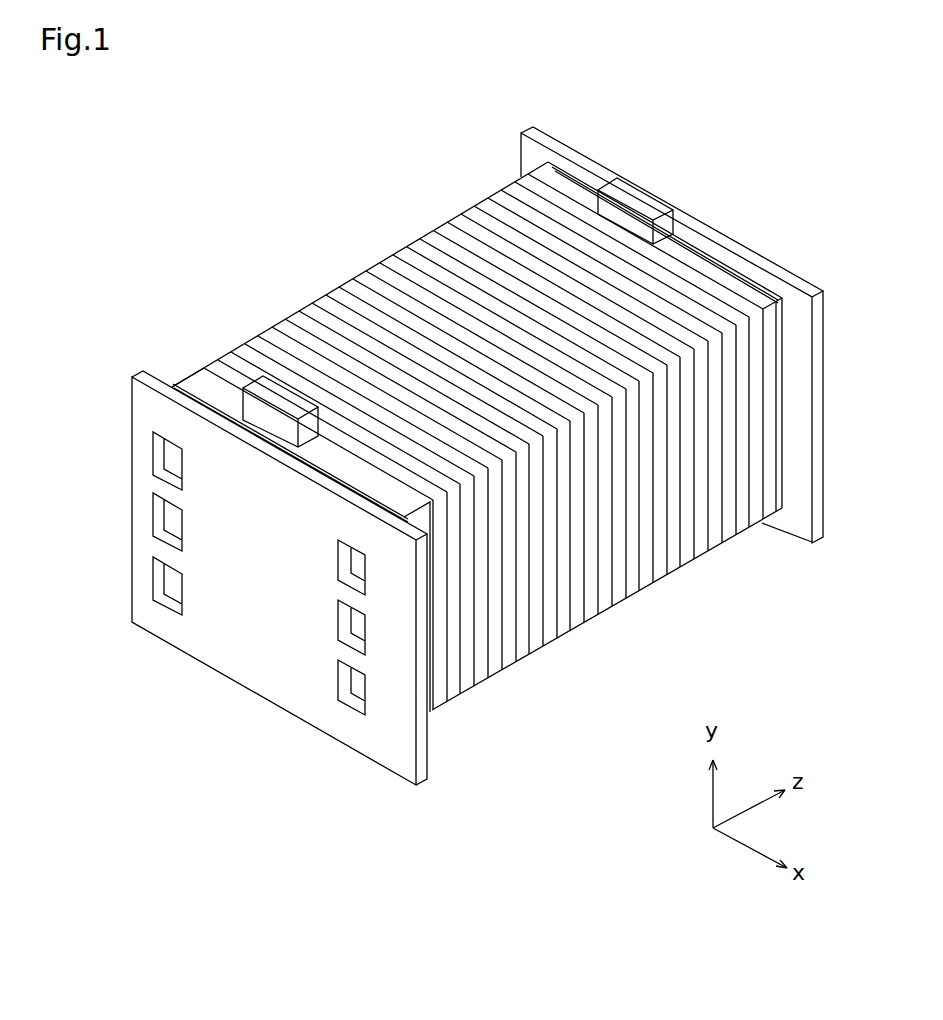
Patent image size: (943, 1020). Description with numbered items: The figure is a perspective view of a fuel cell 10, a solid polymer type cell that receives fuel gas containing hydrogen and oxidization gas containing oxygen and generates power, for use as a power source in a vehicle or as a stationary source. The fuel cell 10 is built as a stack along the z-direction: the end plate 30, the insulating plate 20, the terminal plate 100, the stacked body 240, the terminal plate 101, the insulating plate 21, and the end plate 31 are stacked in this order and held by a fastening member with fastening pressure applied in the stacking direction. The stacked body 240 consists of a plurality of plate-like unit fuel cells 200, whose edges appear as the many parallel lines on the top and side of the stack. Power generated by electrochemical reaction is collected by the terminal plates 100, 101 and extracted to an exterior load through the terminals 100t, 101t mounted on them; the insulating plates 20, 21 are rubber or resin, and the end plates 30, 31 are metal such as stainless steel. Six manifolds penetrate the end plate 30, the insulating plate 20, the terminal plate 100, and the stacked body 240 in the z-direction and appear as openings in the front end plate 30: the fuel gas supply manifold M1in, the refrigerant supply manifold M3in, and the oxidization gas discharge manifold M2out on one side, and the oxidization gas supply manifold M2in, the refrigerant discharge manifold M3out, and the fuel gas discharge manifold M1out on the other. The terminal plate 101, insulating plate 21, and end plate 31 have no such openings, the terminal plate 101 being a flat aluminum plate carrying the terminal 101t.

The fuel cell 10 is at (769, 134).
The insulating plate 20 is at (172, 380).
The insulating plate 21 is at (711, 262).
The end plate 30 is at (141, 372).
The end plate 31 is at (778, 270).
The terminal plate 100 is at (208, 383).
The terminal 100t is at (271, 376).
The terminal plate 101 is at (679, 250).
The terminal 101t is at (651, 205).
The unit fuel cell 200 is at (399, 253).
The stacked body 240 is at (635, 628).
The fuel gas supply manifold M1in is at (151, 456).
The refrigerant supply manifold M3in is at (151, 517).
The oxidization gas discharge manifold M2out is at (151, 579).
The oxidization gas supply manifold M2in is at (366, 578).
The refrigerant discharge manifold M3out is at (366, 638).
The fuel gas discharge manifold M1out is at (366, 698).